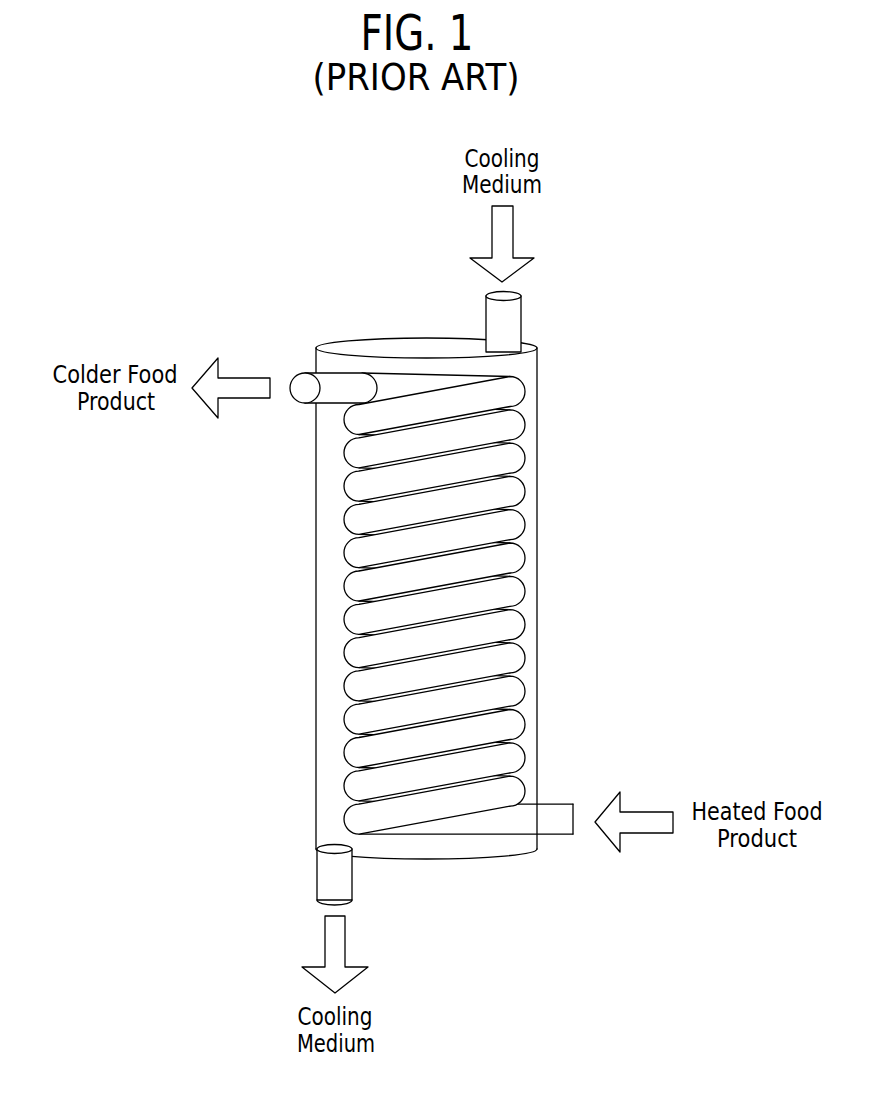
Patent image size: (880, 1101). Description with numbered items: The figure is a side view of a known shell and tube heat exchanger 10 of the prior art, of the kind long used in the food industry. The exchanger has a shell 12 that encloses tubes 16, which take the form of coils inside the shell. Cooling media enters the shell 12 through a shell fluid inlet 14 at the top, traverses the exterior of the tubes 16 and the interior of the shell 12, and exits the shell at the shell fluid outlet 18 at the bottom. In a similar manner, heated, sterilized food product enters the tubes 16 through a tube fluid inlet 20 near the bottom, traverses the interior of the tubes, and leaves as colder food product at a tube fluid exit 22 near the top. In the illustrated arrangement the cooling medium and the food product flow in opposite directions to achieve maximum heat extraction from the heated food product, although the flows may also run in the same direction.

The prior art heat exchanger system 10 is at (607, 194).
The shell 12 is at (316, 607).
The shell fluid inlet 14 is at (521, 322).
The tubes 16 is at (492, 527).
The shell fluid outlet 18 is at (317, 877).
The tube fluid inlet 20 is at (554, 823).
The tube fluid exit 22 is at (300, 373).